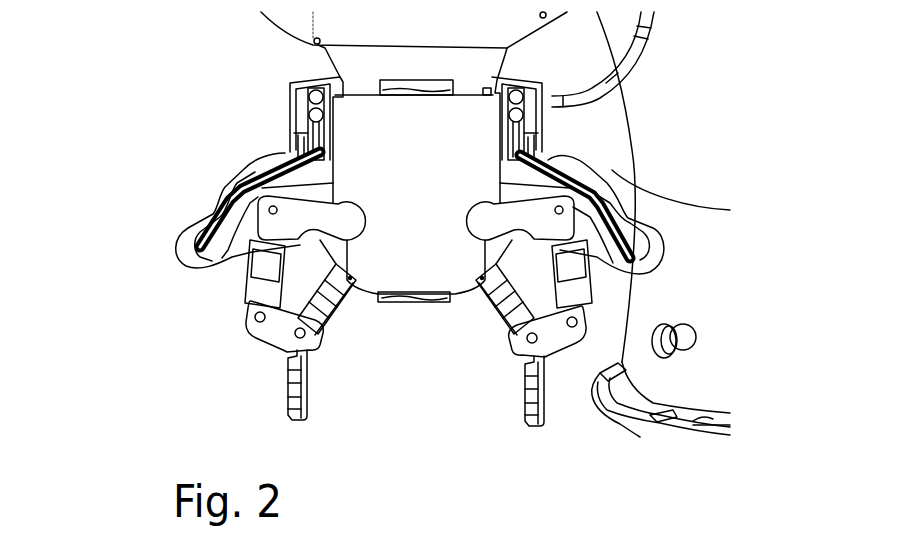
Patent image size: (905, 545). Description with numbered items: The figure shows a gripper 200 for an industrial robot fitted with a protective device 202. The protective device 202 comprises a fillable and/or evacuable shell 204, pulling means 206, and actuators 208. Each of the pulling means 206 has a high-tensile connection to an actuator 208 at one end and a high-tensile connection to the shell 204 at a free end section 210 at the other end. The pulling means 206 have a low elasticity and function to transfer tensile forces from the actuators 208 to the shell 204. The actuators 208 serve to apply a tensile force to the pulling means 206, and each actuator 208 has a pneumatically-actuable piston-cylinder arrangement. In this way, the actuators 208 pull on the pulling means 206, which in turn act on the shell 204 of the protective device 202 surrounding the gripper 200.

The gripper 200 is at (355, 331).
The protective device 202 is at (602, 166).
The shell 204 is at (196, 226).
The pulling means 206 is at (223, 210).
The actuator 208 is at (308, 108).
The free end section 210 is at (187, 211).